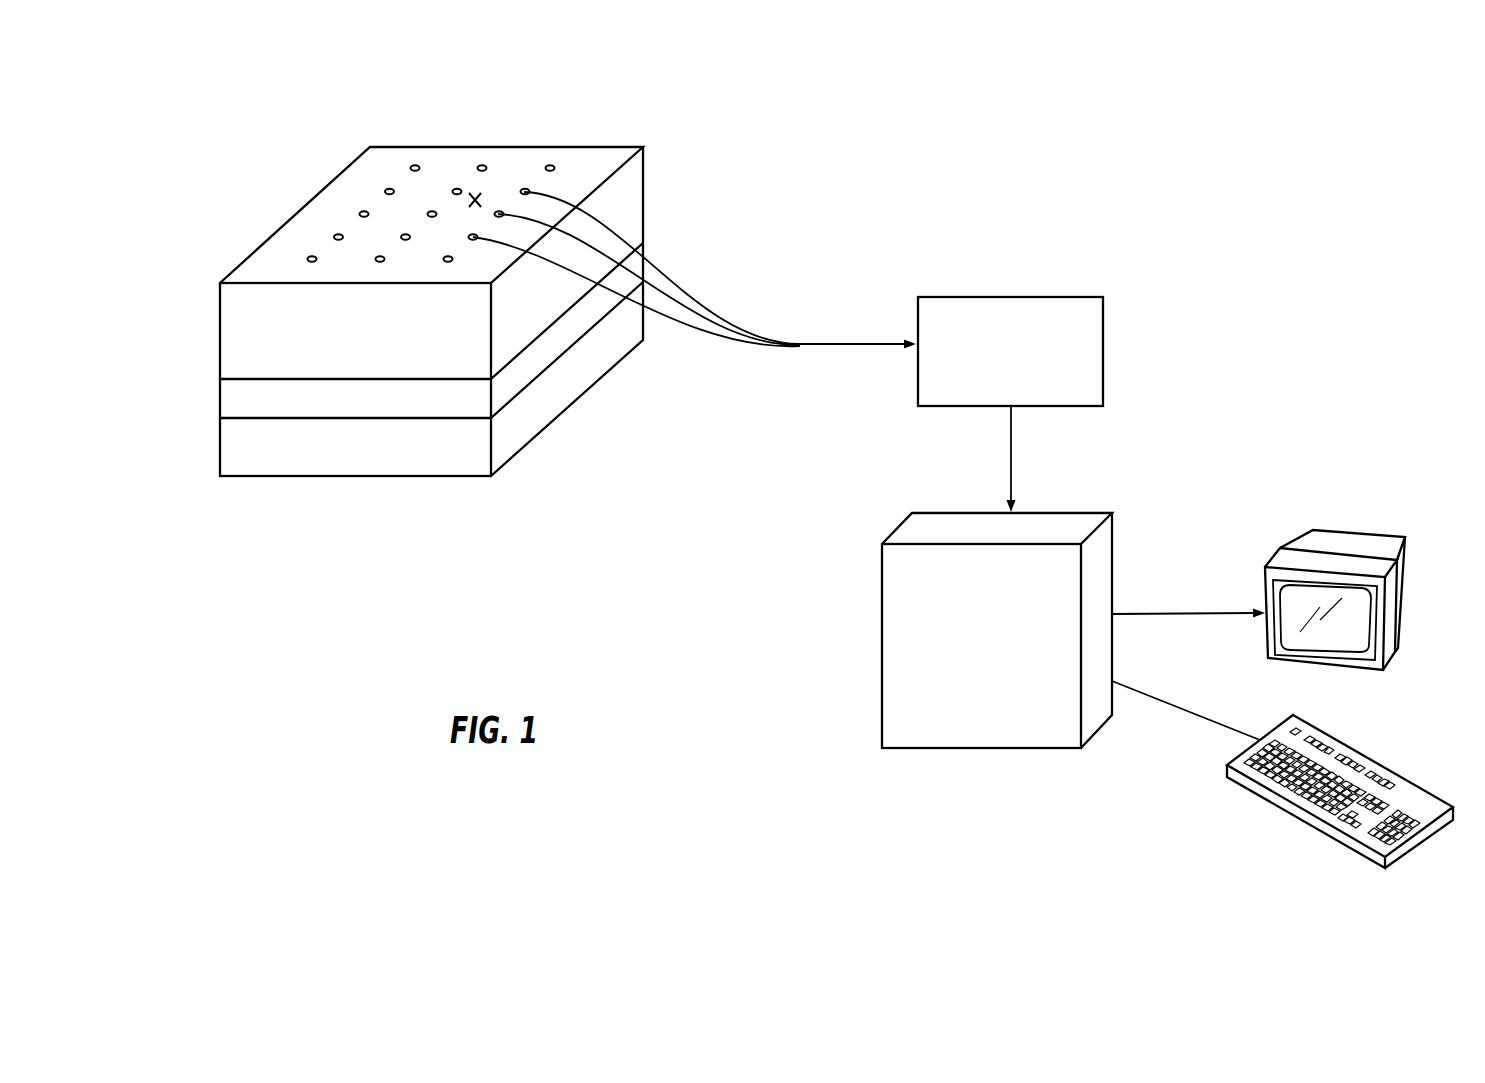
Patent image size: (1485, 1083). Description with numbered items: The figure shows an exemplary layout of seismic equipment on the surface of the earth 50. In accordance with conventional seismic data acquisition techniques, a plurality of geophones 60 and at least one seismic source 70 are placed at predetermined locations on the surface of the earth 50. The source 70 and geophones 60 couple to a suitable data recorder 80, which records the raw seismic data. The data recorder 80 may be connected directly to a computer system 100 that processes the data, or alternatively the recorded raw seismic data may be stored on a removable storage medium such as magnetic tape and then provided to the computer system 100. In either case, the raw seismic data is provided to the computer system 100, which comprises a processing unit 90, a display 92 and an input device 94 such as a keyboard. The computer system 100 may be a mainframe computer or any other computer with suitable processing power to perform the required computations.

The surface of the earth 50 is at (278, 230).
The geophones 60 is at (480, 163).
The seismic source 70 is at (490, 185).
The data recorder 80 is at (1053, 297).
The processing unit 90 is at (1073, 513).
The display 92 is at (1355, 530).
The input device 94 is at (1322, 832).
The computer system 100 is at (1100, 809).